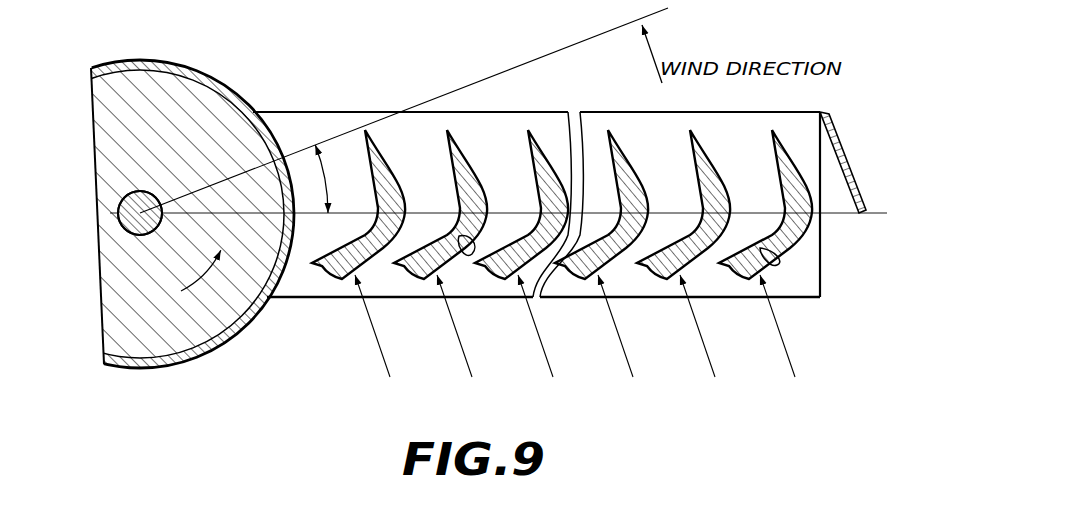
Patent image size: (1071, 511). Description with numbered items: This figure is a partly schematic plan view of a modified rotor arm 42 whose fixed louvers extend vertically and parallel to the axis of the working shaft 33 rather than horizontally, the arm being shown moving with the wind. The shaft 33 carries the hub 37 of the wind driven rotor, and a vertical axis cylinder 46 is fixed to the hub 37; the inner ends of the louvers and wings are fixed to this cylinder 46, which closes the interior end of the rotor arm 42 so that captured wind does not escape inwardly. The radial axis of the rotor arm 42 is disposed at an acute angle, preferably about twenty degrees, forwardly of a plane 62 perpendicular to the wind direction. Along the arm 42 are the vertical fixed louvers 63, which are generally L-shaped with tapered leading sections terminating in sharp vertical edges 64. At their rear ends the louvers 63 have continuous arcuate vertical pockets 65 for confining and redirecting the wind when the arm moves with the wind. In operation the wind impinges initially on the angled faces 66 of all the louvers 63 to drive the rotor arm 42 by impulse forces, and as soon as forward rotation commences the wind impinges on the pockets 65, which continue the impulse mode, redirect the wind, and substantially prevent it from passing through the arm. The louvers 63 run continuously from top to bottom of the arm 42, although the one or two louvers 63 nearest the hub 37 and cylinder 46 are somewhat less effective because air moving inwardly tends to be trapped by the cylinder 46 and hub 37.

The working shaft 33 is at (130, 208).
The hub 37 is at (198, 108).
The rotor arm 42 is at (722, 111).
The vertical axis cylinder 46 is at (253, 110).
The plane perpendicular to the wind direction 62 is at (527, 63).
The vertical fixed louvers 63 is at (387, 174).
The sharp vertical edges 64 is at (608, 132).
The continuous arcuate vertical pockets 65 is at (413, 273).
The angled faces 66 is at (465, 237).